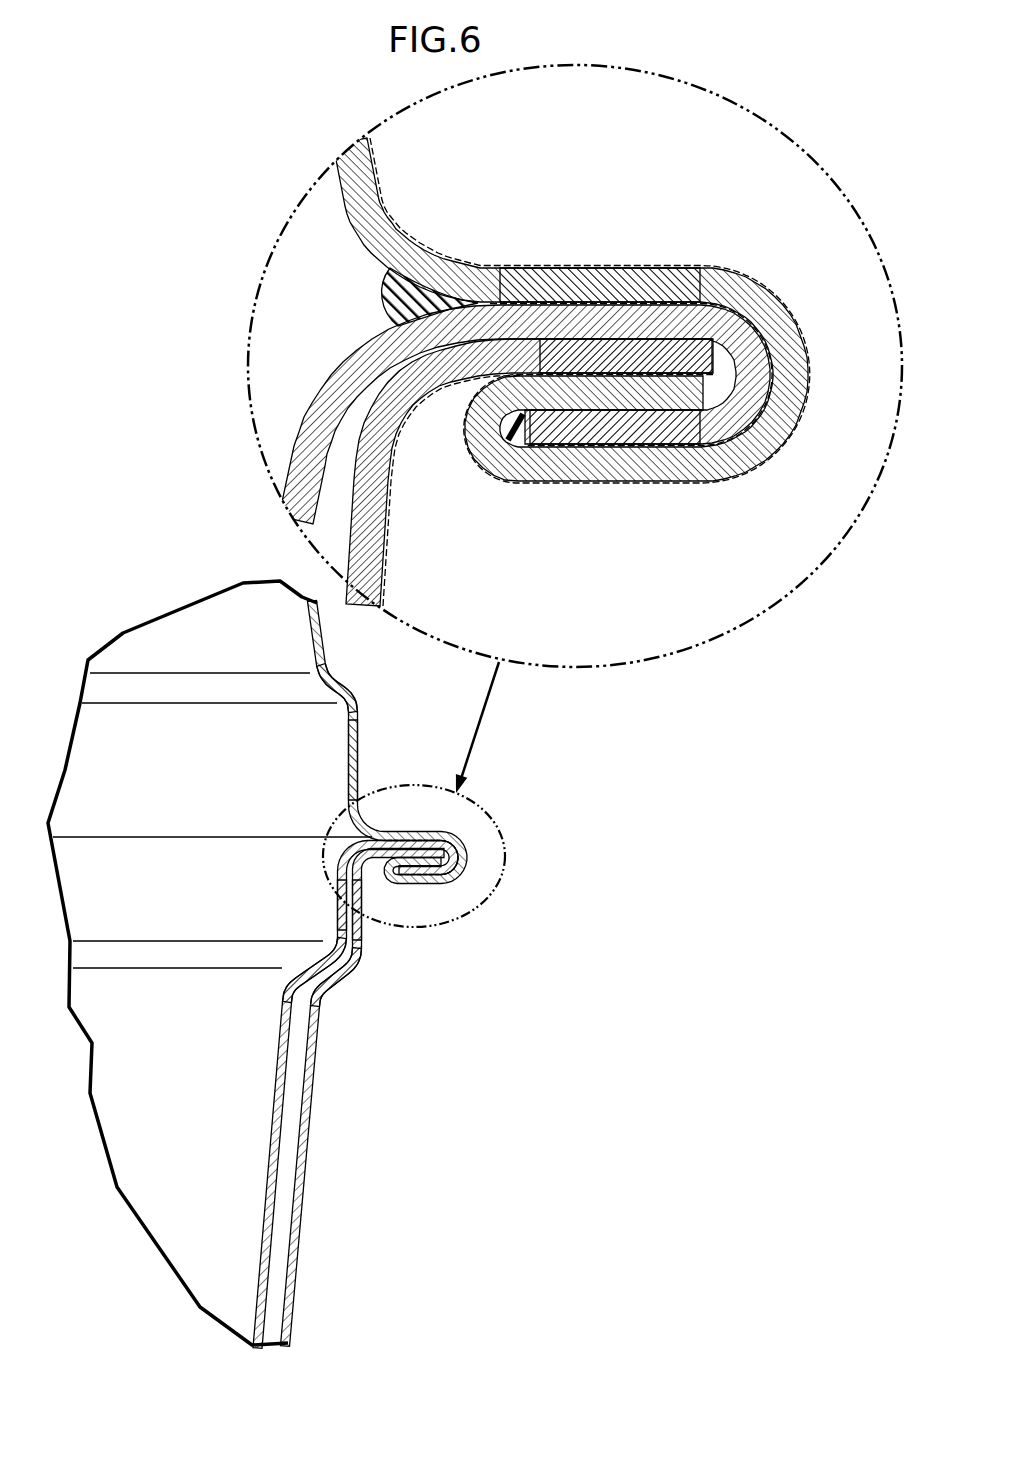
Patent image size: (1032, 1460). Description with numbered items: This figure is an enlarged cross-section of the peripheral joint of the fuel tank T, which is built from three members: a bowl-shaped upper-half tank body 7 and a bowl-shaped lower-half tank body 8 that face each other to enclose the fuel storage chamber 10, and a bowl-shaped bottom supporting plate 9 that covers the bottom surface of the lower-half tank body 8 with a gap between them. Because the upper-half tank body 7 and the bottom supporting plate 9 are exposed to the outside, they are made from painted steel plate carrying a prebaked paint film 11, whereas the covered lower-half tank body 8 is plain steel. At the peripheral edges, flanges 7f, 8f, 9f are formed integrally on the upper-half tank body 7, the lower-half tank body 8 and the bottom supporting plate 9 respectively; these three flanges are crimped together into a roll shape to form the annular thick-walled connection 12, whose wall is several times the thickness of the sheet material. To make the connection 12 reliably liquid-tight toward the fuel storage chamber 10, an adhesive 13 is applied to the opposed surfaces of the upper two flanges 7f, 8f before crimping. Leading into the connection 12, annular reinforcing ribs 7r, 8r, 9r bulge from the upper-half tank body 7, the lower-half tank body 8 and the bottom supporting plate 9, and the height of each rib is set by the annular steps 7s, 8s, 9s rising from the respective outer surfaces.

The fuel tank T is at (156, 609).
The upper-half tank body 7 is at (360, 207).
The flange 7f is at (665, 280).
The annular step 7s is at (340, 690).
The annular reinforcing rib 7r is at (358, 780).
The lower-half tank body 8 is at (300, 450).
The flange 8f is at (720, 428).
The annular step 8s is at (322, 953).
The annular reinforcing rib 8r is at (338, 912).
The bottom supporting plate 9 is at (368, 535).
The flange 9f is at (627, 358).
The annular step 9s is at (343, 975).
The annular reinforcing rib 9r is at (362, 925).
The fuel storage chamber 10 is at (187, 794).
The paint film 11 is at (400, 227).
The thick-walled connection 12 is at (562, 258).
The adhesive 13 is at (392, 296).